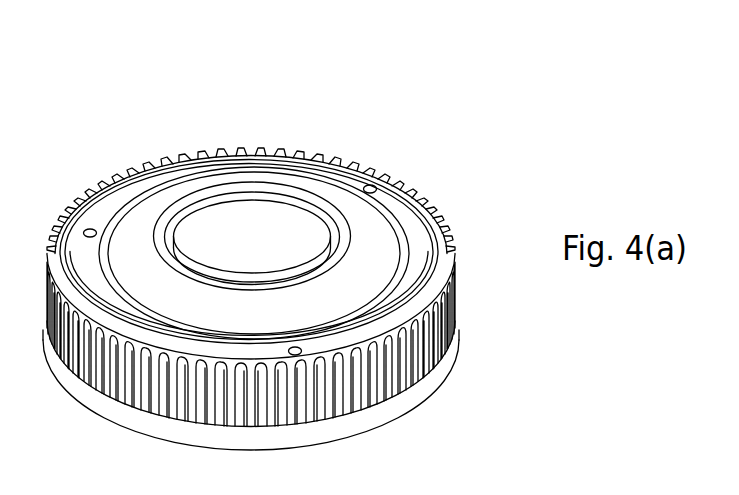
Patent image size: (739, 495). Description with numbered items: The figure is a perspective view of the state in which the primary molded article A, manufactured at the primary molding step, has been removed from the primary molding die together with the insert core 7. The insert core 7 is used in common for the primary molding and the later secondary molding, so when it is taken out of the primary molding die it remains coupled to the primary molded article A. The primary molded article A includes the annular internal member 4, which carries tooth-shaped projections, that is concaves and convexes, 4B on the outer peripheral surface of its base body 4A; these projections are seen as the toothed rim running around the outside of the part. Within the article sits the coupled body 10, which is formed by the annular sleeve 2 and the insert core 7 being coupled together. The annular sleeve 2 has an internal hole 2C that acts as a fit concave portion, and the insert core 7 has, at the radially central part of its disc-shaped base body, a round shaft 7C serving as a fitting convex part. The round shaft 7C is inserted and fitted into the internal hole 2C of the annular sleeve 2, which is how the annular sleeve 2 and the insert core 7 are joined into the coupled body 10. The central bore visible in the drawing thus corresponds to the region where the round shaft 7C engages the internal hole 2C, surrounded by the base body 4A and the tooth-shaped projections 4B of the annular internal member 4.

The primary molded article A is at (97, 173).
The annular sleeve 2 is at (249, 175).
The internal hole 2C is at (207, 267).
The annular internal member 4 is at (437, 78).
The base body 4A is at (345, 188).
The tooth-shaped projections 4B is at (417, 180).
The insert core 7 is at (270, 203).
The round shaft 7C is at (215, 223).
The coupled body 10 is at (307, 78).